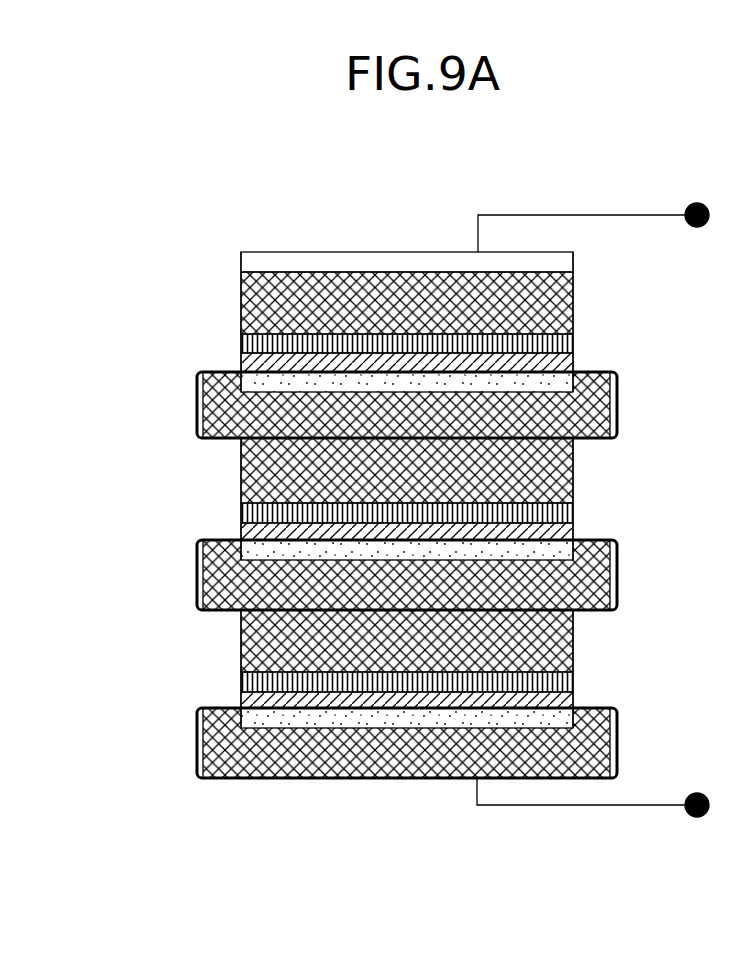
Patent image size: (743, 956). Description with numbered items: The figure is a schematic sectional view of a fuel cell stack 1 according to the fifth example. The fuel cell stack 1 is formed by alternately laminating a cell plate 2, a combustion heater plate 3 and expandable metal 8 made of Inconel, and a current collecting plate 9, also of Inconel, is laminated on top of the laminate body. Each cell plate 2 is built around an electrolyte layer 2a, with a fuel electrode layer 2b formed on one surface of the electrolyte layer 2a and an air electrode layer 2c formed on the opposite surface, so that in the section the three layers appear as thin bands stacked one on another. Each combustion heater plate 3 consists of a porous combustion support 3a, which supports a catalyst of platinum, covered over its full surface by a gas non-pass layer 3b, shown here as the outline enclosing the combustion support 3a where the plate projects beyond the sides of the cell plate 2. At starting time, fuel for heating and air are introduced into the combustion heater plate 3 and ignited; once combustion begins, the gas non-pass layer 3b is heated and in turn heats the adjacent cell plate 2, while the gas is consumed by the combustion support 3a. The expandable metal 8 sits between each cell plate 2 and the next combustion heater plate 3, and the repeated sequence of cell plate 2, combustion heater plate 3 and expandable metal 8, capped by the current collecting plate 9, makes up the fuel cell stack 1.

The fuel cell stack 1 is at (597, 193).
The cell plate 2 is at (682, 252).
The electrolyte layer 2a is at (558, 362).
The fuel electrode layer 2b is at (558, 382).
The air electrode layer 2c is at (558, 343).
The combustion heater plate 3 is at (418, 576).
The combustion support 3a is at (600, 428).
The gas non-pass layer 3b is at (617, 408).
The expandable metal 8 is at (240, 302).
The current collecting plate 9 is at (316, 258).